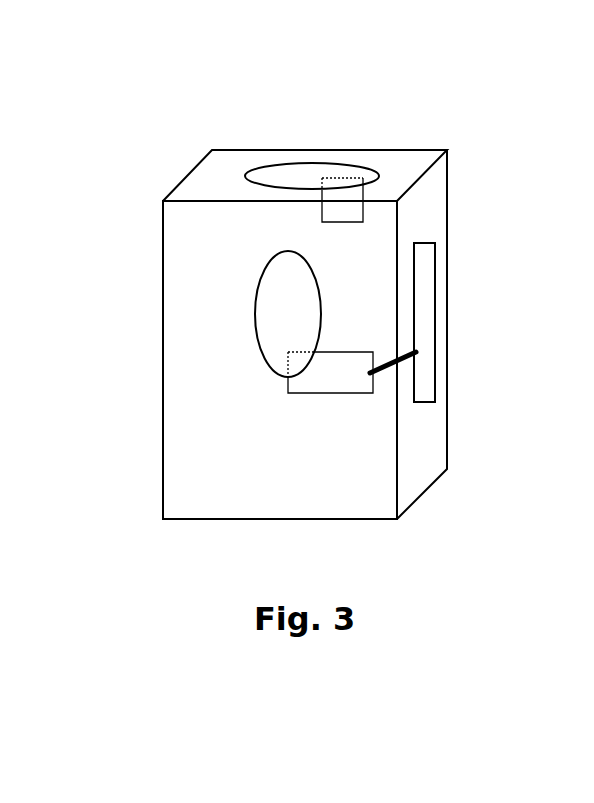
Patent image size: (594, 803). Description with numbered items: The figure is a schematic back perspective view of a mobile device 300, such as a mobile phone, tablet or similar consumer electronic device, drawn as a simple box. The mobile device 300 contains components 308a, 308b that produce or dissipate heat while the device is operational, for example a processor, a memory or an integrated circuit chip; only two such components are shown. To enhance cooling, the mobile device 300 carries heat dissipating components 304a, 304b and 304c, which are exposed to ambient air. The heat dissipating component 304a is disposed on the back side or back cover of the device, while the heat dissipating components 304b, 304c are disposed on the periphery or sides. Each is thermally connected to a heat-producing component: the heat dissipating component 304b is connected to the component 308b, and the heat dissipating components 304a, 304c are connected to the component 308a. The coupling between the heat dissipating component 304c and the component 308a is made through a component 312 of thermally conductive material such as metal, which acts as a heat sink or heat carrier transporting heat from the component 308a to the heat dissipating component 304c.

The mobile device 300 is at (441, 96).
The heat dissipating component 304a is at (257, 277).
The heat dissipating component 304b is at (279, 154).
The heat dissipating component 304c is at (440, 291).
The component 308a is at (330, 372).
The component 308b is at (328, 228).
The component 312 is at (390, 380).